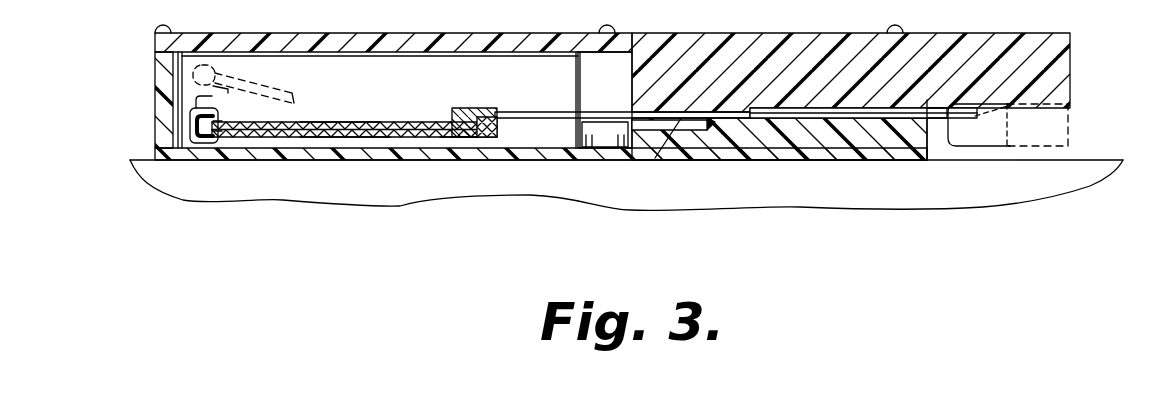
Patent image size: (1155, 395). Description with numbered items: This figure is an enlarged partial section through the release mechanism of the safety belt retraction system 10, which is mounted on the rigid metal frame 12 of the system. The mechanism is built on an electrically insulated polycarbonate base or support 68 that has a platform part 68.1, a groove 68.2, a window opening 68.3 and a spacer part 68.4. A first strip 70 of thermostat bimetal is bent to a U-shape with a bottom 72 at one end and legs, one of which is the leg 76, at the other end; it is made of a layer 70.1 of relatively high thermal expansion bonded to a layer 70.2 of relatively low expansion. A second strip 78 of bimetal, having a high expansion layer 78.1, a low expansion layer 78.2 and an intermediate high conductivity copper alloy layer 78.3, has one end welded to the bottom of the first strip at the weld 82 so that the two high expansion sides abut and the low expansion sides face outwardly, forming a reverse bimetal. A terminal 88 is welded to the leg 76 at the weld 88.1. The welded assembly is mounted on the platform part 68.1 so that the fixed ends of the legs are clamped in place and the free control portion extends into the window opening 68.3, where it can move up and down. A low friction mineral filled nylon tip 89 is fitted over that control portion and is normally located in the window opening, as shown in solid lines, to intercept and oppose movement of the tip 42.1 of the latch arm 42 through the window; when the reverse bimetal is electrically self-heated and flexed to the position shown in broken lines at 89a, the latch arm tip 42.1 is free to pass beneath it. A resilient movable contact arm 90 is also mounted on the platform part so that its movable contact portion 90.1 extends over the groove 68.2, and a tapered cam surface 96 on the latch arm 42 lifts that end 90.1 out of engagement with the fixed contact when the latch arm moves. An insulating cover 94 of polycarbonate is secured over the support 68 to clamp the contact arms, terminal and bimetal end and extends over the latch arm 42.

The safety belt retraction system 10 is at (122, 110).
The frame 12 is at (530, 195).
The latch arm 42 is at (1060, 130).
The latch arm tip 42.1 is at (192, 128).
The insulated base or support 68 is at (318, 166).
The platform part 68.1 is at (737, 114).
The groove 68.2 is at (883, 122).
The window opening 68.3 is at (324, 54).
The spacer part 68.4 is at (153, 78).
The first strip 70 is at (567, 102).
The high expansion metal layer of first strip 70.1 is at (563, 124).
The low expansion metal layer of first strip 70.2 is at (532, 96).
The bottom of first strip 72 is at (490, 110).
The leg of first strip 76 is at (612, 104).
The second strip 78 is at (404, 138).
The high expansion metal layer of second strip 78.1 is at (378, 121).
The low expansion metal layer of second strip 78.2 is at (384, 139).
The intermediate layer 78.3 is at (464, 138).
The weld 82 is at (482, 116).
The terminal 88 is at (657, 131).
The terminal weld 88.1 is at (681, 123).
The tip 89 is at (218, 113).
The flexed tip position 89a is at (228, 64).
The movable contact arm 90 is at (813, 114).
The movable contact portion 90.1 is at (970, 112).
The insulating cover 94 is at (1068, 70).
The cam surface 96 is at (1010, 108).